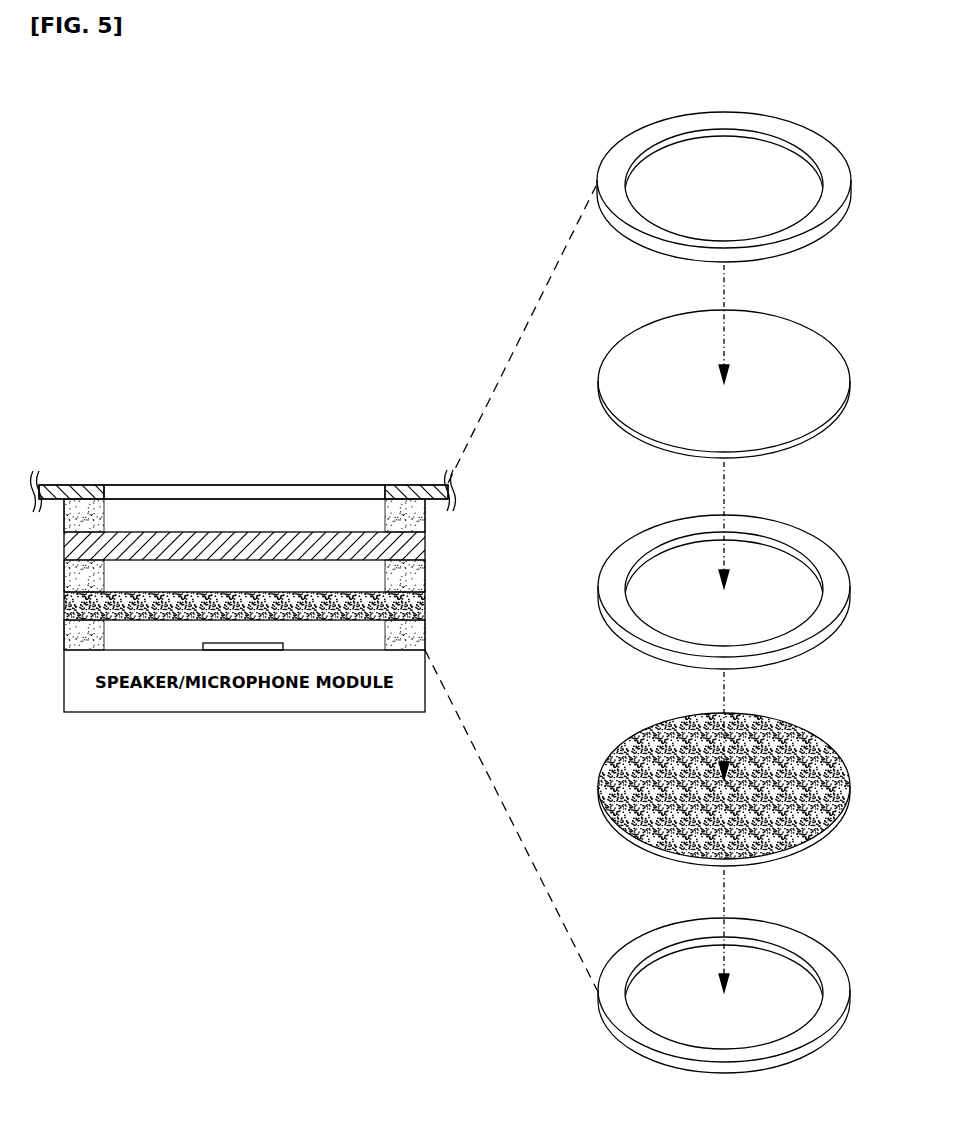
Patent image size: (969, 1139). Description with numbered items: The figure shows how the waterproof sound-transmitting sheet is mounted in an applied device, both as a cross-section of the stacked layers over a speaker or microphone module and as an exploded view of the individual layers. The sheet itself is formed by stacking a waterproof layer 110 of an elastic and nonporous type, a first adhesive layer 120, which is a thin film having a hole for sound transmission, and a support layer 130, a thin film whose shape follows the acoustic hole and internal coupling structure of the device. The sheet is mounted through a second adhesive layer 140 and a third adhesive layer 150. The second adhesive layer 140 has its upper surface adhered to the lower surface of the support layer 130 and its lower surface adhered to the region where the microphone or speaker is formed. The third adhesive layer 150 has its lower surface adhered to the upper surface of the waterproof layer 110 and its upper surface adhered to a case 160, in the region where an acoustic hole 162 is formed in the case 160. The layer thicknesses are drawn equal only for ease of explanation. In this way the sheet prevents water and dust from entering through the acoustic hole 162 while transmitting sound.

The waterproof layer 110 is at (420, 543).
The first adhesive layer 120 is at (420, 573).
The support layer 130 is at (420, 604).
The second adhesive layer 140 is at (420, 637).
The third adhesive layer 150 is at (423, 515).
The case 160 is at (58, 486).
The acoustic hole 162 is at (196, 491).